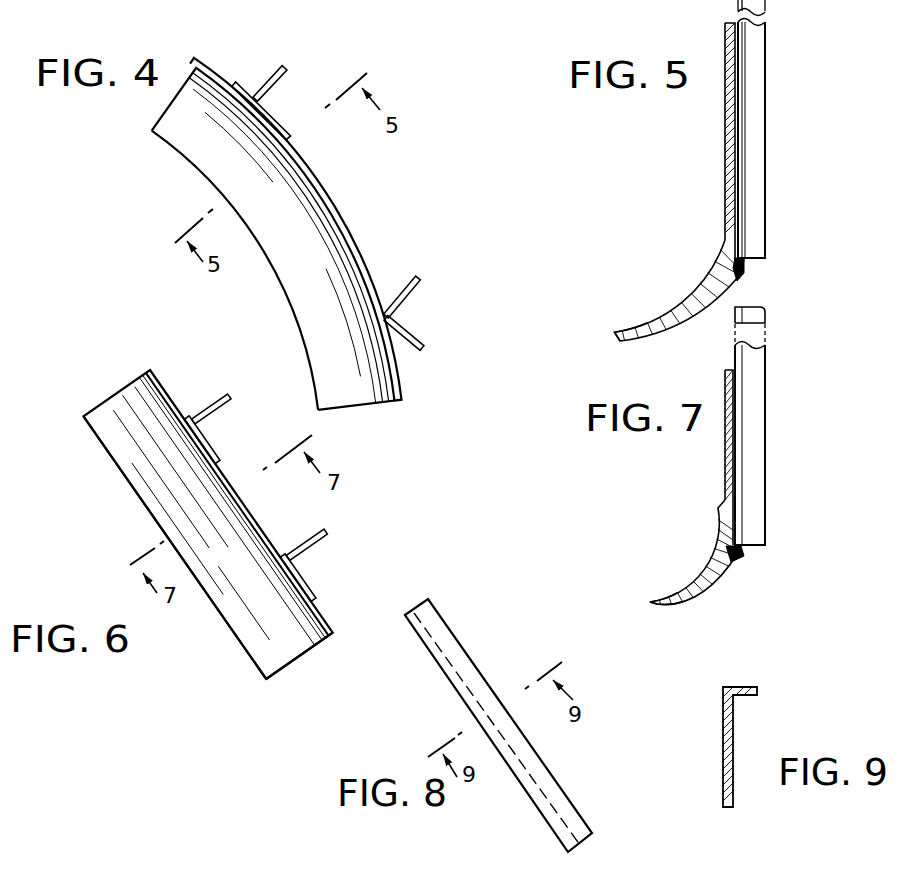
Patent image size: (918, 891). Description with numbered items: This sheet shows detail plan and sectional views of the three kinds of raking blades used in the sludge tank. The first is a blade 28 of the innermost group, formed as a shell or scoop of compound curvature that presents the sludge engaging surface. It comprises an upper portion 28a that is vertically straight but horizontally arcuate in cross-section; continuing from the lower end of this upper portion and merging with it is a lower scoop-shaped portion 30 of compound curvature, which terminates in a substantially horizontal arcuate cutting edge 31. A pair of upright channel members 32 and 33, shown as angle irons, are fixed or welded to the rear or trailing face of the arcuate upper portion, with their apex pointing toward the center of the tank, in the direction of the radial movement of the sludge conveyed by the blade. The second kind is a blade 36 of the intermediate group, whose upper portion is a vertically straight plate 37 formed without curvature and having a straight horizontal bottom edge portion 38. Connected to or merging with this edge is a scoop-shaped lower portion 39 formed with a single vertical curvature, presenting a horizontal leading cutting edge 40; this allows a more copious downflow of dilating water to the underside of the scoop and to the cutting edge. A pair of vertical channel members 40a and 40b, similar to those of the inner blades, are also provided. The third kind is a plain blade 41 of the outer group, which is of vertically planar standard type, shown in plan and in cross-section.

In FIG. 4, the blade 28 is at (185, 172).
In FIG. 5, the blade 28 is at (750, 165).
In FIG. 4, the upper portion 28a is at (216, 80).
In FIG. 5, the upper portion 28a is at (730, 68).
In FIG. 4, the lower scoop-shaped portion 30 is at (305, 220).
In FIG. 5, the lower scoop-shaped portion 30 is at (718, 226).
In FIG. 4, the arcuate cutting edge 31 is at (285, 297).
In FIG. 5, the arcuate cutting edge 31 is at (612, 336).
In FIG. 4, the upright channel member 32 is at (418, 292).
In FIG. 4, the upright channel member 33 is at (273, 86).
In FIG. 5, the upright channel member 33 is at (753, 212).
In FIG. 6, the blade 36 is at (128, 505).
In FIG. 7, the blade 36 is at (748, 435).
In FIG. 6, the vertically straight plate 37 is at (260, 540).
In FIG. 7, the vertically straight plate 37 is at (728, 434).
In FIG. 7, the bottom edge portion 38 is at (729, 562).
In FIG. 6, the scoop-shaped lower portion 39 is at (265, 653).
In FIG. 7, the scoop-shaped lower portion 39 is at (722, 550).
In FIG. 6, the leading cutting edge 40 is at (230, 633).
In FIG. 7, the leading cutting edge 40 is at (648, 601).
In FIG. 6, the vertical channel member 40a is at (310, 548).
In FIG. 6, the vertical channel member 40b is at (209, 413).
In FIG. 8, the blade 41 is at (457, 707).
In FIG. 9, the blade 41 is at (757, 739).